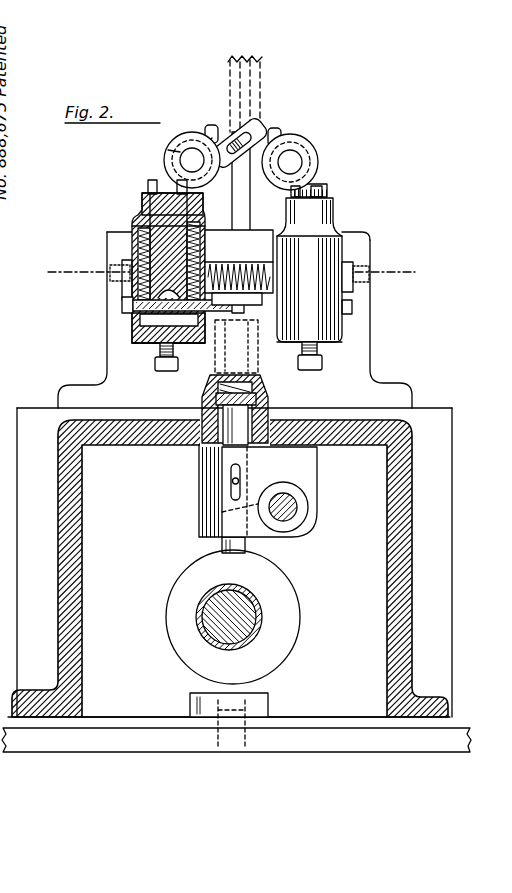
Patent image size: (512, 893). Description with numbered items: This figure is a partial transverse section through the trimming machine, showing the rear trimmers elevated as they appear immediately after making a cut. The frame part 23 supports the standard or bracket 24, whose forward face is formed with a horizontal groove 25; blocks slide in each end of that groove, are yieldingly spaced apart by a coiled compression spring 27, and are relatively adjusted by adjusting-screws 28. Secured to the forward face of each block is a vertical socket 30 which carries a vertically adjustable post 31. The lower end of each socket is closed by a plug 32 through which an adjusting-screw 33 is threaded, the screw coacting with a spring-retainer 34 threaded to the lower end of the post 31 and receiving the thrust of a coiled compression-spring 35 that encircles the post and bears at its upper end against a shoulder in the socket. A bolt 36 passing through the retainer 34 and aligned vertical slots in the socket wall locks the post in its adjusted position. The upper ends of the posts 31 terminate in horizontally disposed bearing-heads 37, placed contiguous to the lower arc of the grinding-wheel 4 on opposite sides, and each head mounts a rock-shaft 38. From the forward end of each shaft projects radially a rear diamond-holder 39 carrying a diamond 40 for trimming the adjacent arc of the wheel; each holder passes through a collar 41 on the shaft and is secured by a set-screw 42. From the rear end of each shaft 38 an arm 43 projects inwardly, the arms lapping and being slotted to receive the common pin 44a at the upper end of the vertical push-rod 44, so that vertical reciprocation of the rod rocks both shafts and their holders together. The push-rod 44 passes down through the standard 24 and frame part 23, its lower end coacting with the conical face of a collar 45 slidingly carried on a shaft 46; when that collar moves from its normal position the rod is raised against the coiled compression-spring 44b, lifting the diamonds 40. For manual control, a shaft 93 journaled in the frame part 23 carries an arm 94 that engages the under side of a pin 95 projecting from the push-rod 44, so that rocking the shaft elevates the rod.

The grinding-wheel 4 is at (255, 92).
The frame part 23 is at (388, 552).
The standard or bracket 24 is at (370, 365).
The horizontal groove 25 is at (258, 266).
The coiled compression spring 27 is at (222, 268).
The adjusting-screws 28 is at (118, 283).
The vertical socket 30 is at (144, 218).
The post 31 is at (160, 210).
The plug 32 is at (147, 346).
The adjusting-screw 33 is at (168, 372).
The spring-retainer 34 is at (132, 322).
The coiled compression-spring 35 is at (140, 250).
The bolt 36 is at (126, 306).
The bearing-heads 37 is at (306, 142).
The rock-shaft 38 is at (186, 160).
The rear diamond-holders 39 is at (206, 132).
The diamond 40 is at (212, 124).
The collar 41 is at (180, 146).
The set-screw 42 is at (168, 150).
The arm 43 is at (295, 364).
The vertical push-rod 44 is at (244, 214).
The pin 44a is at (240, 140).
The coiled compression-spring 44b is at (246, 386).
The collar 45 is at (284, 596).
The shaft 46 is at (250, 617).
The shaft 93 is at (298, 508).
The arm 94 is at (242, 524).
The pin 95 is at (241, 478).